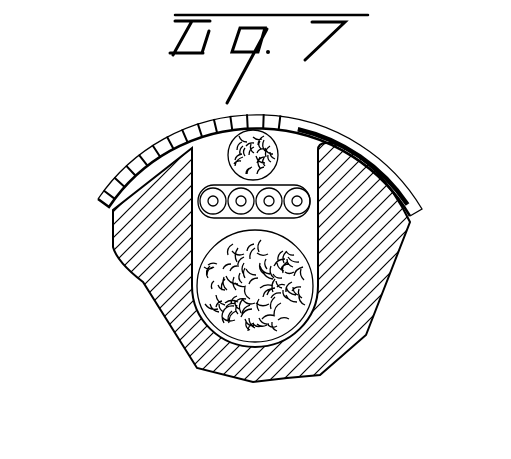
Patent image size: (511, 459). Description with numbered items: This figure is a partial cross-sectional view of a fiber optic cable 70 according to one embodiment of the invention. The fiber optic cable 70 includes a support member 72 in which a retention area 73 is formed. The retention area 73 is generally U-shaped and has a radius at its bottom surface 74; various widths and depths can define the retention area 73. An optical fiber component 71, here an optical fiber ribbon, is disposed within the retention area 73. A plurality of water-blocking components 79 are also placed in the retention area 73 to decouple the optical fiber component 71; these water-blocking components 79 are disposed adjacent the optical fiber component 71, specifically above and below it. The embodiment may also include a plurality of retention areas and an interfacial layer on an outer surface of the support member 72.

The fiber optic cable 70 is at (485, 98).
The optical fiber component 71 is at (300, 206).
The support member 72 is at (143, 261).
The retention area 73 is at (208, 150).
The bottom surface 74 is at (262, 346).
The water-blocking components 79 is at (265, 131).